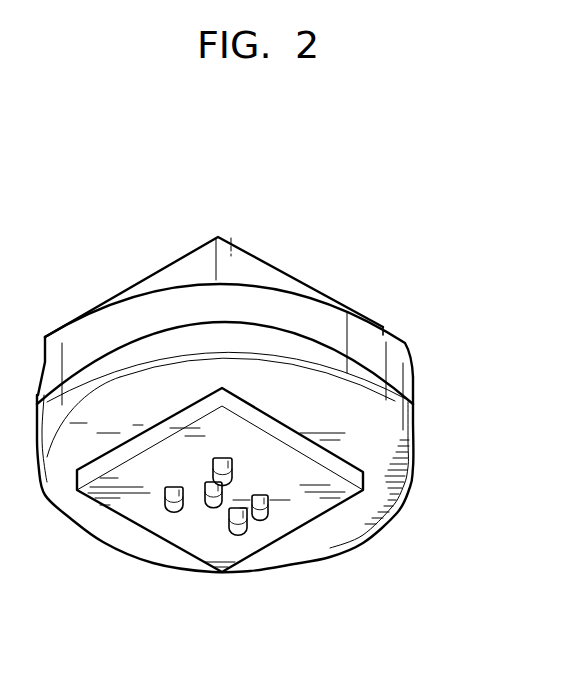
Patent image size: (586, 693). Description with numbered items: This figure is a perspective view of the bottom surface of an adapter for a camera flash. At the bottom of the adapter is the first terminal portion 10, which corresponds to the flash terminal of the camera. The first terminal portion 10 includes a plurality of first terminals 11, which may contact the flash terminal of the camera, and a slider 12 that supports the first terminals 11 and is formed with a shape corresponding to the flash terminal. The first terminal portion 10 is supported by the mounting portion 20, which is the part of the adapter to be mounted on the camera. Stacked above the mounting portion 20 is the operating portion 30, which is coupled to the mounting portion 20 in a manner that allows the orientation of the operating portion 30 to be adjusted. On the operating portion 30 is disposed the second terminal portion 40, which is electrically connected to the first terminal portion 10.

The first terminal portion 10 is at (245, 515).
The first terminals 11 is at (242, 538).
The slider 12 is at (312, 506).
The mounting portion 20 is at (400, 397).
The operating portion 30 is at (400, 356).
The second terminal portion 40 is at (270, 249).